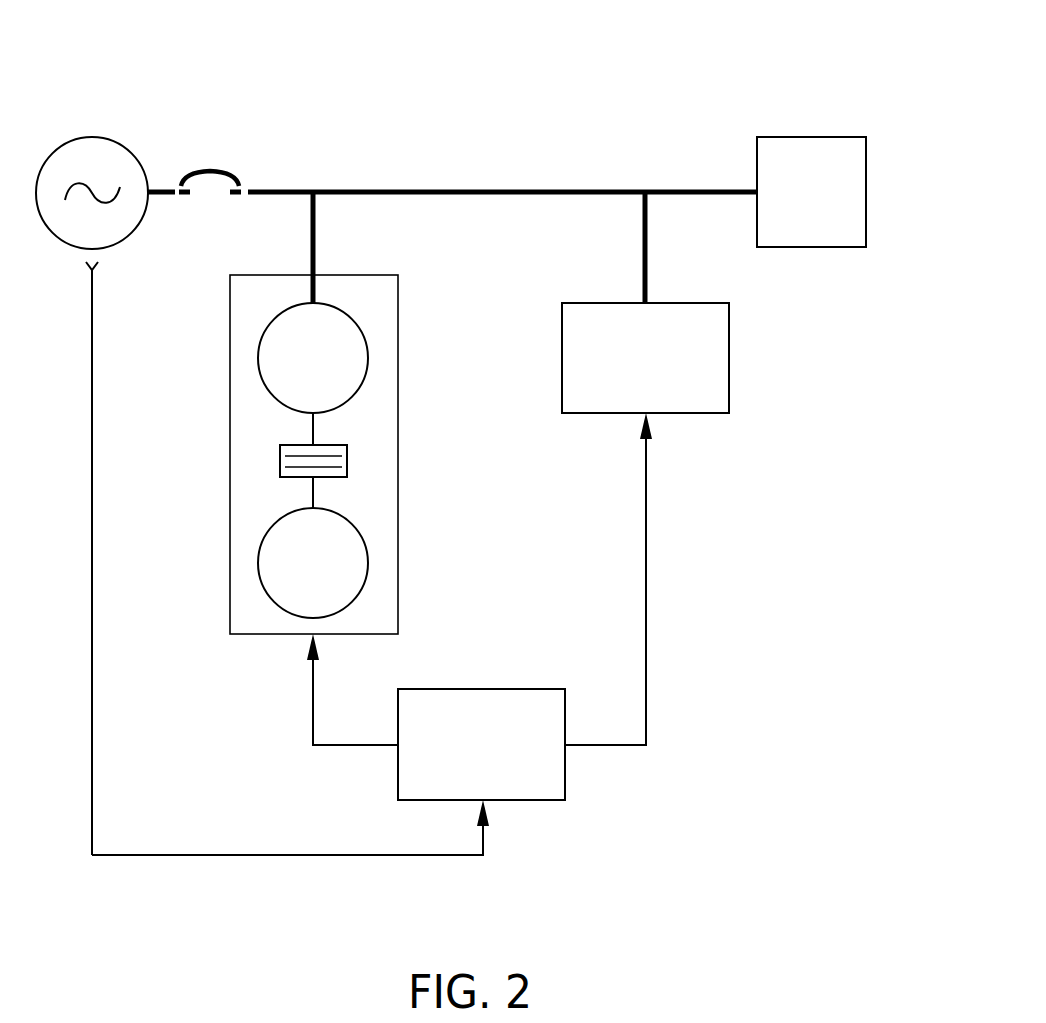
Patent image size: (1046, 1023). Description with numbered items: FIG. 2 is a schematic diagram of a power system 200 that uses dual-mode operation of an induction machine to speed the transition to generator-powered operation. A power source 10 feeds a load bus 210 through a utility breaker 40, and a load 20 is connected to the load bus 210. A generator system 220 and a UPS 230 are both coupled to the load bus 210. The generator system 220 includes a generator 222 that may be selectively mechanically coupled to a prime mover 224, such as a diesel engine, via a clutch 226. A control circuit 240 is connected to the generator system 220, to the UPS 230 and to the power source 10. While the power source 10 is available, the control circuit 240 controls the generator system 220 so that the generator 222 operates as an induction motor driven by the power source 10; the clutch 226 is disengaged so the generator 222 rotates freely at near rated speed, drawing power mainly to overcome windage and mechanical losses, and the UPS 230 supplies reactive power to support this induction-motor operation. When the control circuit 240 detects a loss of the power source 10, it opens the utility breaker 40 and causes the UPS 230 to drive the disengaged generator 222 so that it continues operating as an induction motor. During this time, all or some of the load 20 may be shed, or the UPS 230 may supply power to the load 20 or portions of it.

The power source 10 is at (92, 136).
The load 20 is at (812, 136).
The utility breaker 40 is at (231, 149).
The power system 200 is at (616, 108).
The load bus 210 is at (338, 190).
The generator system 220 is at (346, 454).
The generator 222 is at (323, 305).
The prime mover 224 is at (332, 508).
The clutch 226 is at (325, 445).
The UPS 230 is at (729, 356).
The control circuit 240 is at (483, 689).